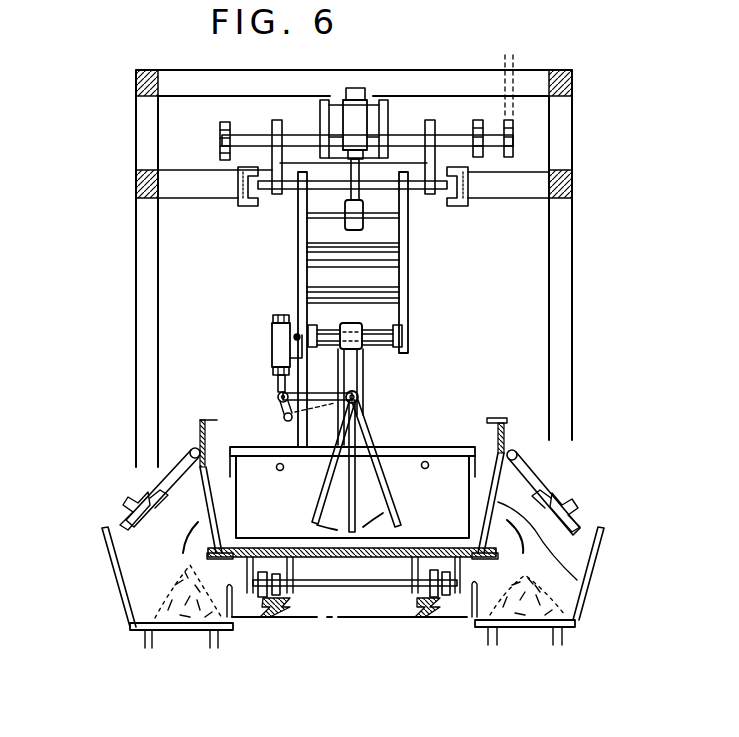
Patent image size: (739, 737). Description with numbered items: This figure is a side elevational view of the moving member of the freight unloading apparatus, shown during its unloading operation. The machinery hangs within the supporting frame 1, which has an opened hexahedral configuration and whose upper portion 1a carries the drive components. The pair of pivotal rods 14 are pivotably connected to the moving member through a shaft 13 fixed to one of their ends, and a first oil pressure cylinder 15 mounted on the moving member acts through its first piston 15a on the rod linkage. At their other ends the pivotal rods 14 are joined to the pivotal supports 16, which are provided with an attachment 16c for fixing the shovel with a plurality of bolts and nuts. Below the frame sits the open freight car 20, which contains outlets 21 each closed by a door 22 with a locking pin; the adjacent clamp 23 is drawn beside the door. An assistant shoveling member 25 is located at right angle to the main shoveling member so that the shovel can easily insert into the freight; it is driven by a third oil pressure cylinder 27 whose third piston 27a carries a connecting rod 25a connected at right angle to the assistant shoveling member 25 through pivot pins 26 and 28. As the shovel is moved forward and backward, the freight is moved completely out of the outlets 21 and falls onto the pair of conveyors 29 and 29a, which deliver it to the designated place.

The supporting frame 1 is at (567, 243).
The upper frame portion 1a is at (537, 133).
The shaft 13 is at (380, 223).
The pivotal rods 14 is at (410, 268).
The first oil pressure cylinder 15 is at (388, 122).
The first piston 15a is at (363, 177).
The pivotal supports 16 is at (408, 409).
The attachment 16c is at (228, 447).
The open freight car 20 is at (508, 422).
The outlets 21 is at (580, 577).
The door 22 is at (533, 478).
The clamp 23 is at (577, 517).
The assistant shoveling member 25 is at (353, 532).
The connecting rod 25a is at (362, 376).
The pivot pin 26 is at (358, 395).
The third oil pressure cylinder 27 is at (270, 337).
The third piston 27a is at (273, 382).
The pivot pin 28 is at (275, 405).
The conveyor 29 is at (173, 630).
The conveyor 29a is at (517, 627).